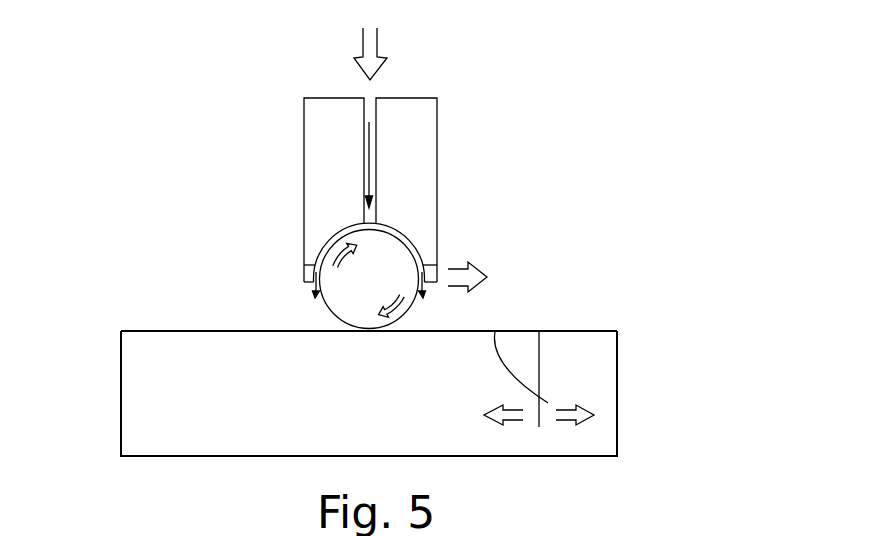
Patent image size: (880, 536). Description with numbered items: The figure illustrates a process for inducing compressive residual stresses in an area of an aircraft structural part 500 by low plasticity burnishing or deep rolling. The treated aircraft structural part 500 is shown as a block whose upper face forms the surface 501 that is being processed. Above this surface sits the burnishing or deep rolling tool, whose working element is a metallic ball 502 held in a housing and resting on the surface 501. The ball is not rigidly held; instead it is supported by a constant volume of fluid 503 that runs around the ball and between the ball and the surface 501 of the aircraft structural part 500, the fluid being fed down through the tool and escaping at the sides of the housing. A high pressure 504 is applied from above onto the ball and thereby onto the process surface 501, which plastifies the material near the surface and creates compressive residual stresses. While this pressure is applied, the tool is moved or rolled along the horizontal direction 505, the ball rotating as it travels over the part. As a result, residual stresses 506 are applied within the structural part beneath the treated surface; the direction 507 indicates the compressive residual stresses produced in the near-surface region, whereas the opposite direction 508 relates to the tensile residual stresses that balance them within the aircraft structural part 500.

The aircraft structural part 500 is at (130, 400).
The surface 501 is at (147, 329).
The metallic ball 502 is at (395, 250).
The constant volume of fluid 503 is at (372, 158).
The high pressure 504 is at (370, 53).
The horizontal direction 505 is at (477, 271).
The residual stresses 506 is at (507, 373).
The direction of compressive residual stresses 507 is at (500, 420).
The direction of tensile residual stresses 508 is at (585, 408).